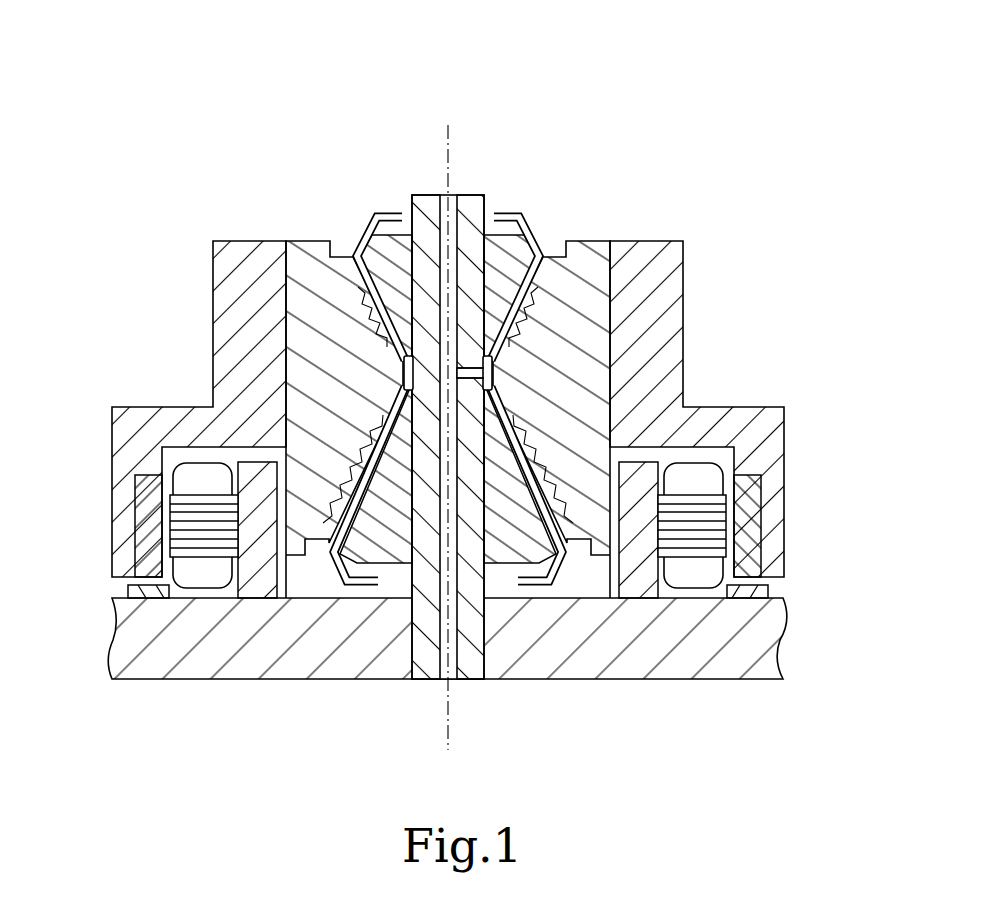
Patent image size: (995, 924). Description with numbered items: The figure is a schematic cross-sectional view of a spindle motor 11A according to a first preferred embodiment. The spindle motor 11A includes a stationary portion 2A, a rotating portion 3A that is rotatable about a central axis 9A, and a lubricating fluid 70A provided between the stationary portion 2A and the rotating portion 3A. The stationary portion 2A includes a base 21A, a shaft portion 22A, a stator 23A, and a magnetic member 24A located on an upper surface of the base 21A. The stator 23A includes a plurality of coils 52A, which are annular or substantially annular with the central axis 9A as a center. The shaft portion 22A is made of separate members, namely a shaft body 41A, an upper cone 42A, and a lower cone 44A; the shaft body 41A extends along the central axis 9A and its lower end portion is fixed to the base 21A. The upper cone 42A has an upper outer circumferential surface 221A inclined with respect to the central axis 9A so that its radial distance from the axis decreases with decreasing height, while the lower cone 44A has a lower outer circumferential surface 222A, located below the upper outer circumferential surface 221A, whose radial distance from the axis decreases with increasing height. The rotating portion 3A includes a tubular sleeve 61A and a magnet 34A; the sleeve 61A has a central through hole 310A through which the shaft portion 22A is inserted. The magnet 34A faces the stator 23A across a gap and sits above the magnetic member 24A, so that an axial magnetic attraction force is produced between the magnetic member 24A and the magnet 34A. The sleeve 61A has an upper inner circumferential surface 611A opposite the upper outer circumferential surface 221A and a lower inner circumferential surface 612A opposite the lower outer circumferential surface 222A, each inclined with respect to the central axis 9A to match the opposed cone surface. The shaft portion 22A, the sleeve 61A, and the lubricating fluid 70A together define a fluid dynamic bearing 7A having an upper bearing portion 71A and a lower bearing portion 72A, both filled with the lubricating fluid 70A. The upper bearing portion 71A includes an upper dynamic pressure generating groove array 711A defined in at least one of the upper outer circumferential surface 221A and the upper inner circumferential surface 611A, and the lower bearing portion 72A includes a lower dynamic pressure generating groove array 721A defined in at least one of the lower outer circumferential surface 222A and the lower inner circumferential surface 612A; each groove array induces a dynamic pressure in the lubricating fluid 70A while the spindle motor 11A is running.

The spindle motor 11A is at (277, 118).
The central axis 9A is at (440, 145).
The rotating portion 3A is at (673, 224).
The stationary portion 2A is at (177, 695).
The base 21A is at (598, 662).
The shaft portion 22A is at (139, 257).
The stator 23A is at (205, 590).
The magnetic member 24A is at (745, 592).
The magnet 34A is at (150, 505).
The shaft body 41A is at (402, 367).
The upper cone 42A is at (393, 282).
The lower cone 44A is at (427, 373).
The coils 52A is at (200, 478).
The sleeve 61A is at (303, 253).
The upper inner circumferential surface 611A is at (499, 290).
The lower inner circumferential surface 612A is at (540, 468).
The lubricating fluid 70A is at (362, 240).
The fluid dynamic bearing 7A is at (753, 322).
The upper bearing portion 71A is at (523, 330).
The lower bearing portion 72A is at (535, 425).
The upper dynamic pressure generating groove array 711A is at (556, 302).
The lower dynamic pressure generating groove array 721A is at (548, 460).
The upper outer circumferential surface 221A is at (541, 322).
The lower outer circumferential surface 222A is at (562, 485).
The central through hole 310A is at (385, 512).